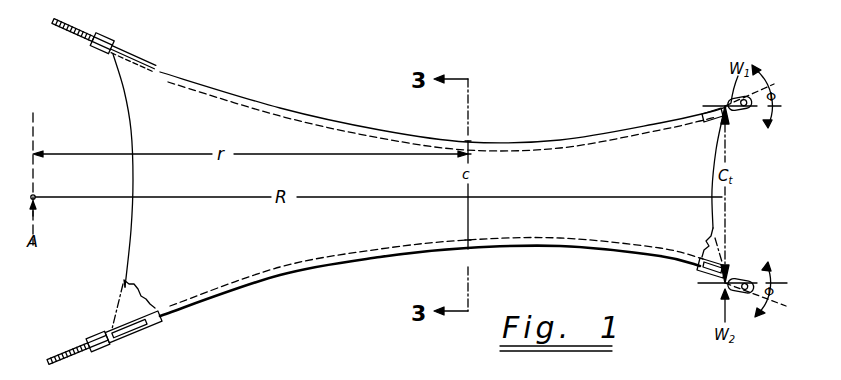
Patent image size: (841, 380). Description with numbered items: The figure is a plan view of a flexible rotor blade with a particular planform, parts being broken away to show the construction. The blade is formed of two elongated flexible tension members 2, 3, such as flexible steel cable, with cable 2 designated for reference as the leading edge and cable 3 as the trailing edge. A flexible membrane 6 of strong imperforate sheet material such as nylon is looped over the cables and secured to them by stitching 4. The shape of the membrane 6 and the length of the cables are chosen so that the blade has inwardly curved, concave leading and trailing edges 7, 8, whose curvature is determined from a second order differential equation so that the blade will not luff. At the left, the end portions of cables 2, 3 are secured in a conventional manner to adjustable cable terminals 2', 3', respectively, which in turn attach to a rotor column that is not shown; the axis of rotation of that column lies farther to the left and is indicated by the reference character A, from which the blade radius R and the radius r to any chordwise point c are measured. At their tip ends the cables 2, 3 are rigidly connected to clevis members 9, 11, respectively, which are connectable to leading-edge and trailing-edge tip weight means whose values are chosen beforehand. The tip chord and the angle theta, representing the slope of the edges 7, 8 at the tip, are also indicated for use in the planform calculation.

The flexible tension member 2 is at (144, 54).
The adjustable cable terminal 2' is at (82, 31).
The flexible tension member 3 is at (136, 330).
The adjustable cable terminal 3' is at (77, 354).
The stitching 4 is at (322, 128).
The flexible membrane 6 is at (225, 243).
The leading edge 7 is at (258, 100).
The trailing edge 8 is at (313, 273).
The clevis member 9 is at (731, 118).
The clevis member 11 is at (734, 272).